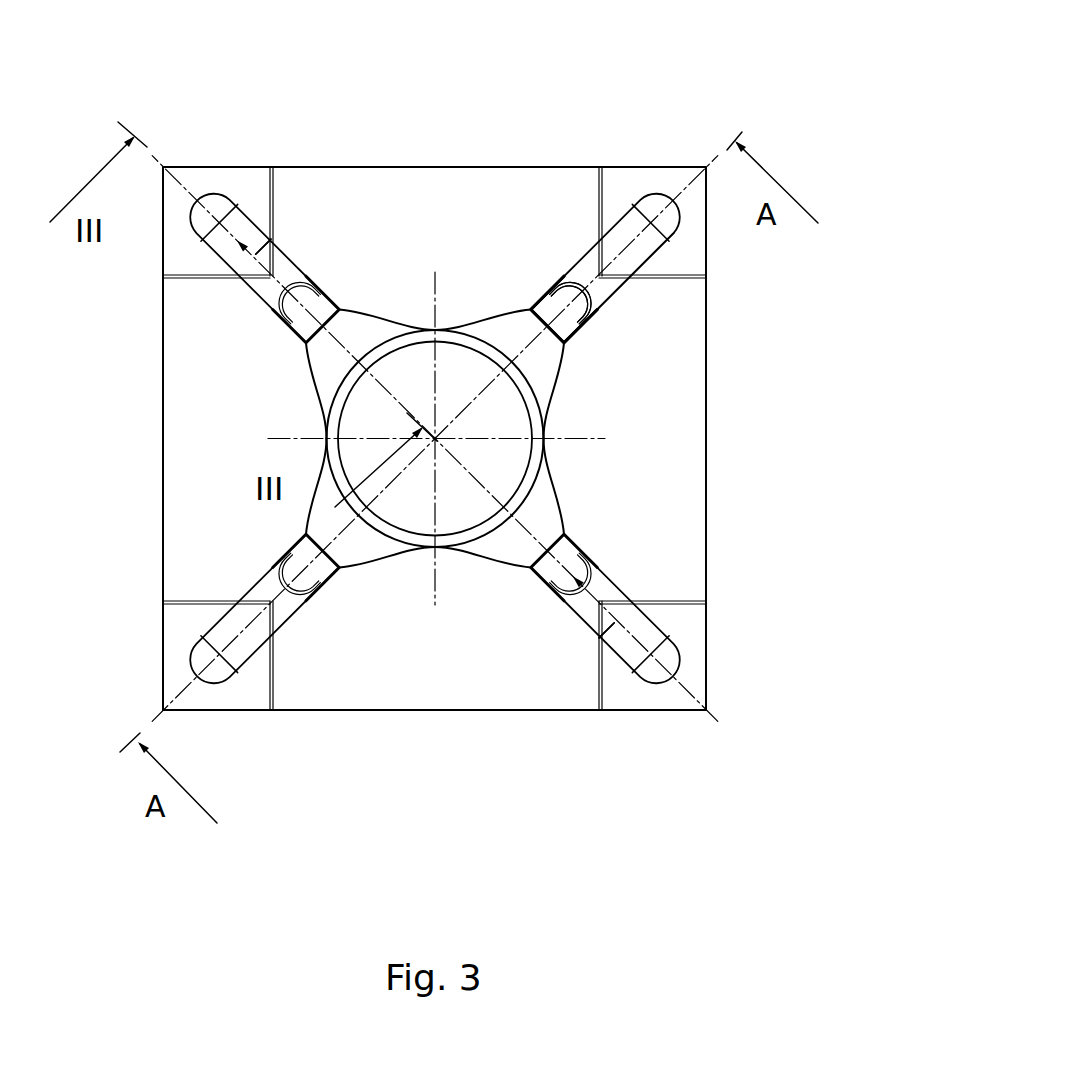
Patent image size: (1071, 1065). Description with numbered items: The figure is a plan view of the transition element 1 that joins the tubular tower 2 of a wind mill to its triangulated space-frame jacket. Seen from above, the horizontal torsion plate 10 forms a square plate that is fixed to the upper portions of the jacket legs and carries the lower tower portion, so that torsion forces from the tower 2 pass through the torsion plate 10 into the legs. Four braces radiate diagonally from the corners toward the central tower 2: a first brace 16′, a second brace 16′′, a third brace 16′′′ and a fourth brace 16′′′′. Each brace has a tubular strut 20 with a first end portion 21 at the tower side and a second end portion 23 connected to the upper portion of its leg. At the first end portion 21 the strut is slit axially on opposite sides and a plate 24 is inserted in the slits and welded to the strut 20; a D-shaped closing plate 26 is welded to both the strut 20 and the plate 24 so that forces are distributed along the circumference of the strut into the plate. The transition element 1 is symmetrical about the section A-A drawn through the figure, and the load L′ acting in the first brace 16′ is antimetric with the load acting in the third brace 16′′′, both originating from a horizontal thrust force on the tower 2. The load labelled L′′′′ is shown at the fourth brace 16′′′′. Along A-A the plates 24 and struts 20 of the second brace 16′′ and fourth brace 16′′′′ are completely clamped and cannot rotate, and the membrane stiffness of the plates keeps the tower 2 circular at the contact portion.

The transition element 1 is at (598, 123).
The tower 2 is at (535, 453).
The torsion plate 10 is at (673, 493).
The first brace 16′ is at (574, 610).
The second brace 16′′ is at (277, 627).
The third brace 16′′′ is at (293, 255).
The fourth brace 16′′′′ is at (578, 262).
The tubular strut 20 is at (607, 287).
The first end portion 21 is at (608, 294).
The second end portion 23 is at (655, 242).
The plate 24 is at (547, 365).
The D-shaped closing plate 26 is at (580, 325).
The load L′ is at (599, 638).
The length L′′′′ is at (271, 239).